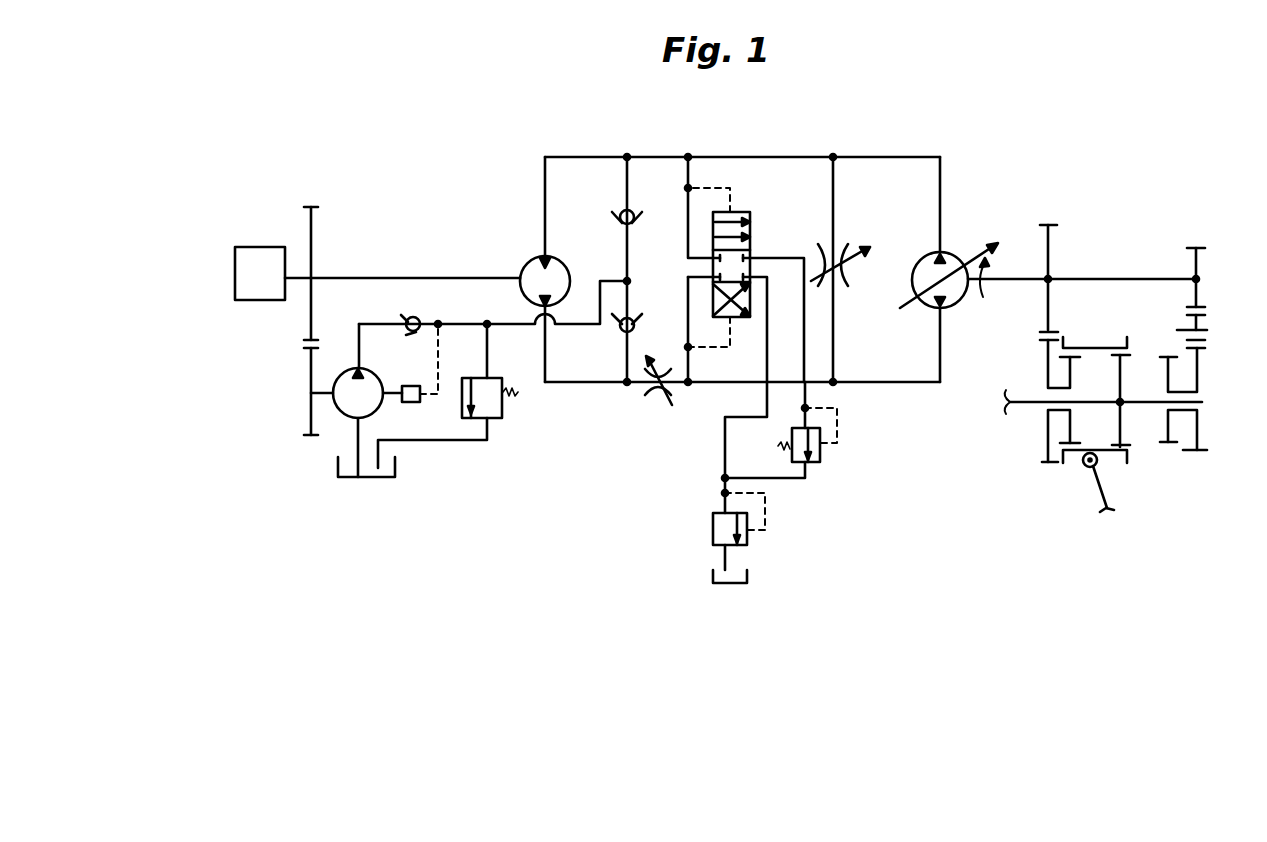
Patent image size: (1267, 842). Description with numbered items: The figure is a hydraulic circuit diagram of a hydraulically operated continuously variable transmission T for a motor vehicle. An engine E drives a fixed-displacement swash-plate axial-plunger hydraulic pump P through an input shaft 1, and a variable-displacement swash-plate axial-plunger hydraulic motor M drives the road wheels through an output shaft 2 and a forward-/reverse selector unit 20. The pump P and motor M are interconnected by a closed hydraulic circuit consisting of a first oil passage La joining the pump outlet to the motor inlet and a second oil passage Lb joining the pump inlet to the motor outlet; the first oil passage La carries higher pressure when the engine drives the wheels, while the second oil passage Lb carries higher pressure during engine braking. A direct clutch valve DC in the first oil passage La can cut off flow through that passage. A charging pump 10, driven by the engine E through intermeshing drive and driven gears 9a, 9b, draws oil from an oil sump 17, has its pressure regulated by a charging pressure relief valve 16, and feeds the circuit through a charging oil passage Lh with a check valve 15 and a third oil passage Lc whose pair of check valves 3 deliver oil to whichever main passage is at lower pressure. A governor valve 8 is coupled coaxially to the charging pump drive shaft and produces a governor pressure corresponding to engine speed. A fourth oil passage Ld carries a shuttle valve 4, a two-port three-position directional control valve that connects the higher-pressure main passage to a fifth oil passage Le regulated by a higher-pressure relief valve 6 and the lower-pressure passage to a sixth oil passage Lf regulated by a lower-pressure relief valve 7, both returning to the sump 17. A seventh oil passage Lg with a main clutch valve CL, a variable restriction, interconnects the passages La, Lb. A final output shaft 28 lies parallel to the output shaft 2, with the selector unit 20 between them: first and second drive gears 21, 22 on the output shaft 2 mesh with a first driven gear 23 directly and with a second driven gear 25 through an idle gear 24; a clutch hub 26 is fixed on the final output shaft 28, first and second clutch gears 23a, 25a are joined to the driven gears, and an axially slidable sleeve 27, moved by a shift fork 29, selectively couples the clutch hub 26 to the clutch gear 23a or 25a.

The engine E is at (235, 263).
The input shaft 1 is at (406, 276).
The hydraulic pump P is at (525, 264).
The drive gear 9a is at (308, 327).
The driven gear 9b is at (308, 372).
The charging pump 10 is at (383, 404).
The governor valve 8 is at (420, 399).
The check valve 15 is at (410, 333).
The charging pressure relief valve 16 is at (502, 378).
The oil sump 17 is at (395, 472).
The second oil passage Lb is at (597, 156).
The third oil passage Lc is at (630, 256).
The check valves 3 is at (618, 210).
The charging oil passage Lh is at (571, 322).
The first oil passage La is at (592, 381).
The direct clutch valve DC is at (649, 396).
The fourth oil passage Ld is at (690, 169).
The shuttle valve 4 is at (751, 212).
The fifth oil passage Le is at (773, 258).
The seventh oil passage Lg is at (835, 190).
The main clutch valve CL is at (846, 273).
The continuously variable transmission T is at (916, 141).
The hydraulic motor M is at (947, 250).
The output shaft 2 is at (1016, 275).
The forward-/reverse selector unit 20 is at (1142, 229).
The first drive gear 21 is at (1050, 257).
The second drive gear 22 is at (1200, 256).
The first driven gear 23 is at (1046, 353).
The first clutch gear 23a is at (1075, 364).
The idle gear 24 is at (1202, 322).
The second clutch gear 25a is at (1196, 352).
The second driven gear 25 is at (1198, 428).
The clutch hub 26 is at (1123, 368).
The sleeve 27 is at (1130, 454).
The final output shaft 28 is at (1026, 406).
The shift fork 29 is at (1115, 502).
The sixth oil passage Lf is at (728, 433).
The higher-pressure relief valve 6 is at (820, 456).
The lower-pressure relief valve 7 is at (749, 541).